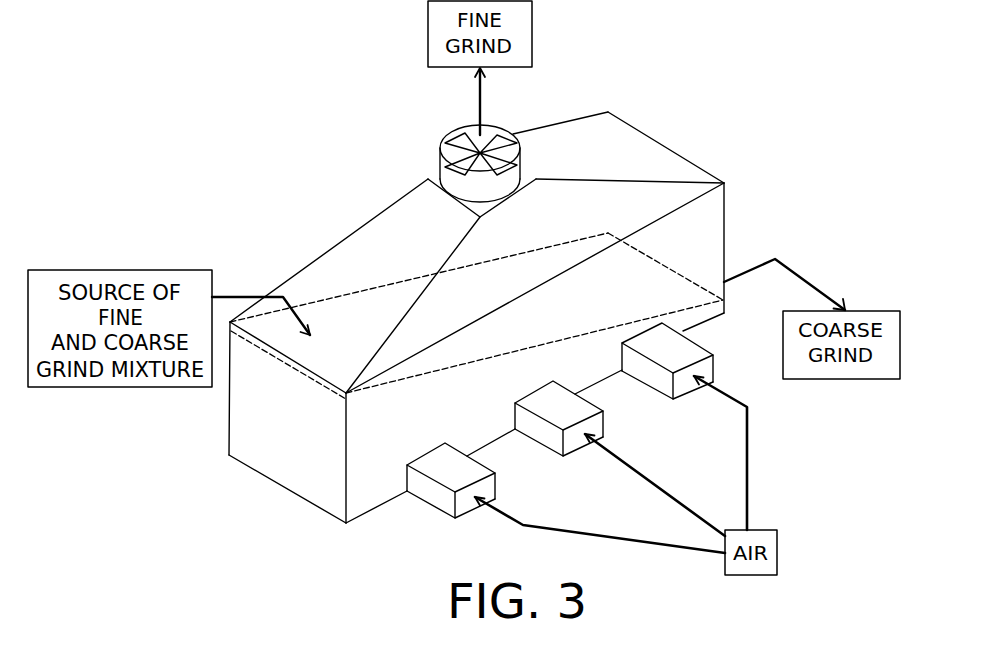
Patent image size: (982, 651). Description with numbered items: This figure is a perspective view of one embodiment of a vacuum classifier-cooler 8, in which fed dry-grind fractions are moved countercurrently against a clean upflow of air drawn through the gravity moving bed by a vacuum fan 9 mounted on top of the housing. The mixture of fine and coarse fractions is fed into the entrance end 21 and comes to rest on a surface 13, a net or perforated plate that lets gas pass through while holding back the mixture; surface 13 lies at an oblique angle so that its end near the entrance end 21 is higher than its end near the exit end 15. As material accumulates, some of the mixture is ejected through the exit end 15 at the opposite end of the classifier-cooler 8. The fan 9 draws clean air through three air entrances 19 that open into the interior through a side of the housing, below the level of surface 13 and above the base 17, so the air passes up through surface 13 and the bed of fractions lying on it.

The vacuum classifier-cooler 8 is at (676, 118).
The vacuum fan 9 is at (463, 143).
The surface 13 is at (388, 386).
The exit end 15 is at (728, 263).
The base 17 is at (363, 517).
The air entrances 19 is at (472, 465).
The entrance end 21 is at (307, 358).